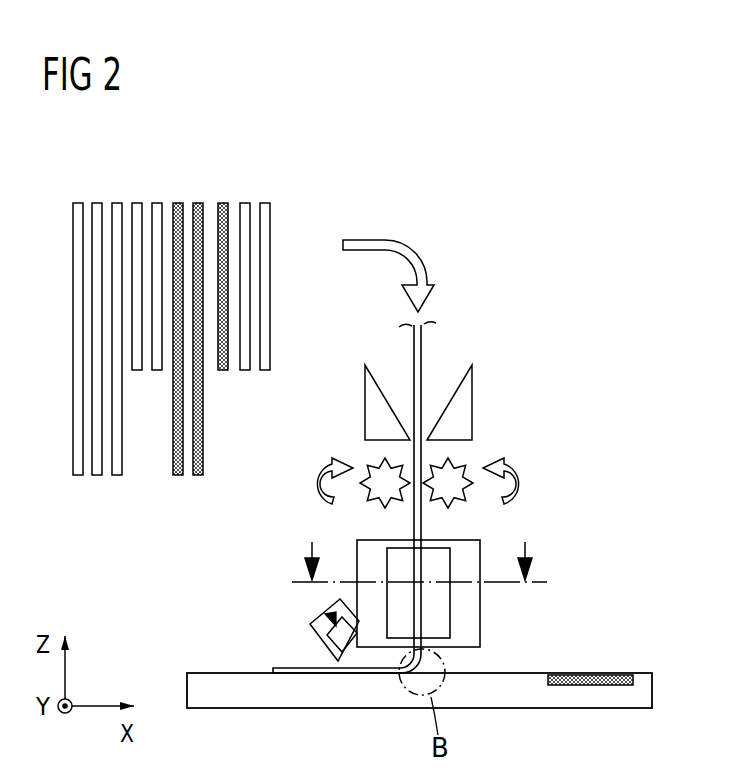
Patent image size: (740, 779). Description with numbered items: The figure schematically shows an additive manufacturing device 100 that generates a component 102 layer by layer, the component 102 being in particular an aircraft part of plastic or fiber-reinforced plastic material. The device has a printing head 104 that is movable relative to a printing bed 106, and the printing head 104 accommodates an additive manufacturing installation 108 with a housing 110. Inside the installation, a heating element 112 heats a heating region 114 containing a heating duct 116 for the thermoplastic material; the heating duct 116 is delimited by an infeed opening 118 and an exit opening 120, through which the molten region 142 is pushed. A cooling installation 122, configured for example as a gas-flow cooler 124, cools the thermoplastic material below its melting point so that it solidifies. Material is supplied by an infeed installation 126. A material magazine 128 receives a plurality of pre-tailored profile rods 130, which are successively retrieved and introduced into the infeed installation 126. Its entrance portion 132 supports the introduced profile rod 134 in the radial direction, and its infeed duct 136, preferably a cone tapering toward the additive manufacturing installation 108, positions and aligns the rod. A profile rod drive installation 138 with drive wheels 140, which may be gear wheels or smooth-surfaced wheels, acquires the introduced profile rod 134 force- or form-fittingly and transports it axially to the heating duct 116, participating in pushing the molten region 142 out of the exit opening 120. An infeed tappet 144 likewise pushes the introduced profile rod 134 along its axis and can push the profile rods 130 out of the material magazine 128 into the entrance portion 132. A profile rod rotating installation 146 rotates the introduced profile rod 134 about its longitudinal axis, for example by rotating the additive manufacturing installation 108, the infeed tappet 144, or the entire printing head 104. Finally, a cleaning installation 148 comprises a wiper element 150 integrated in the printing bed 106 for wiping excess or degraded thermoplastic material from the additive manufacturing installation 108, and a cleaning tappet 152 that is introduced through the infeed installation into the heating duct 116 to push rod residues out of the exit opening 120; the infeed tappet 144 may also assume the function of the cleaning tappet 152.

The additive manufacturing device 100 is at (606, 183).
The component 102 is at (270, 654).
The printing head 104 is at (272, 505).
The printing bed 106 is at (583, 709).
The additive manufacturing installation 108 is at (246, 556).
The housing 110 is at (470, 600).
The heating element 112 is at (440, 616).
The heating region 114 is at (397, 609).
The heating duct 116 is at (413, 622).
The infeed opening 118 is at (400, 538).
The exit opening 120 is at (427, 648).
The cooling installation 122 is at (322, 617).
The gas-flow cooler 124 is at (328, 636).
The infeed installation 126 is at (548, 368).
The material magazine 128 is at (177, 184).
The profile rods 130 is at (78, 184).
The entrance portion 132 is at (472, 404).
The introduced profile rod 134 is at (422, 350).
The infeed duct 136 is at (377, 362).
The profile rod drive installation 138 is at (313, 455).
The drive wheels 140 is at (386, 467).
The molten region 142 is at (436, 648).
The infeed tappet 144 is at (390, 330).
The profile rod rotating installation 146 is at (338, 390).
The cleaning installation 148 is at (466, 308).
The wiper element 150 is at (616, 674).
The cleaning tappet 152 is at (440, 291).